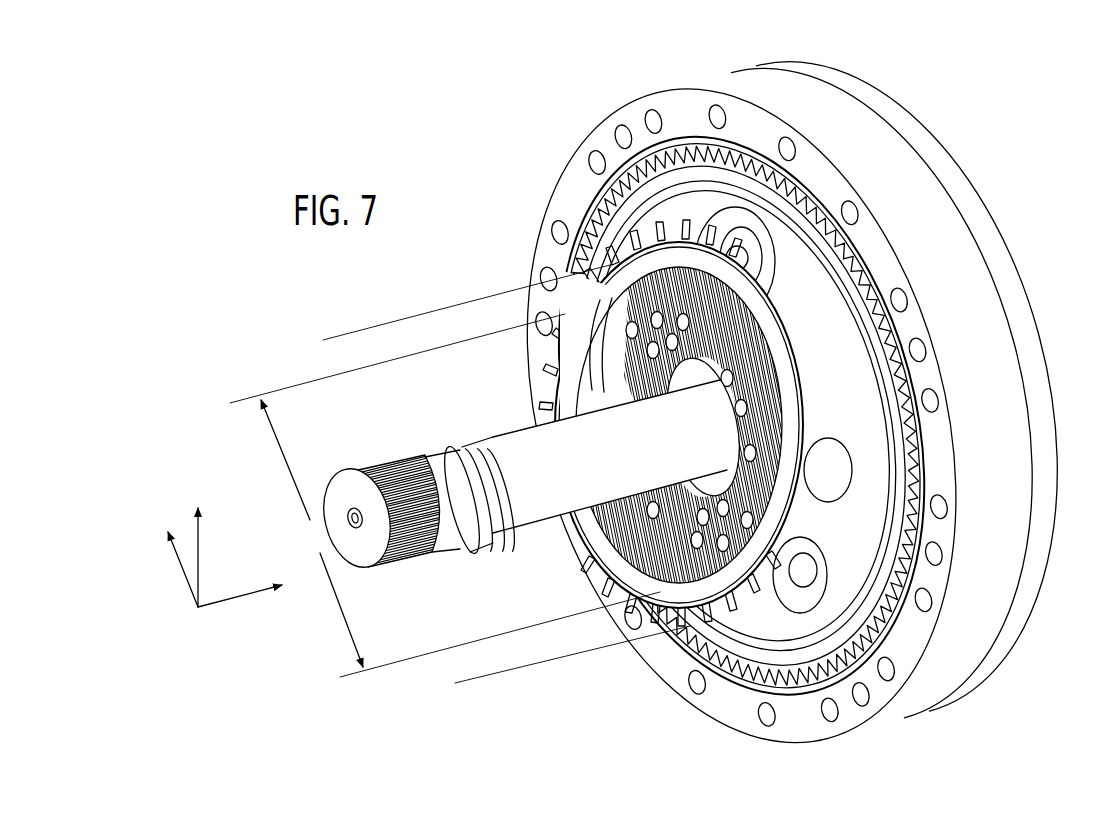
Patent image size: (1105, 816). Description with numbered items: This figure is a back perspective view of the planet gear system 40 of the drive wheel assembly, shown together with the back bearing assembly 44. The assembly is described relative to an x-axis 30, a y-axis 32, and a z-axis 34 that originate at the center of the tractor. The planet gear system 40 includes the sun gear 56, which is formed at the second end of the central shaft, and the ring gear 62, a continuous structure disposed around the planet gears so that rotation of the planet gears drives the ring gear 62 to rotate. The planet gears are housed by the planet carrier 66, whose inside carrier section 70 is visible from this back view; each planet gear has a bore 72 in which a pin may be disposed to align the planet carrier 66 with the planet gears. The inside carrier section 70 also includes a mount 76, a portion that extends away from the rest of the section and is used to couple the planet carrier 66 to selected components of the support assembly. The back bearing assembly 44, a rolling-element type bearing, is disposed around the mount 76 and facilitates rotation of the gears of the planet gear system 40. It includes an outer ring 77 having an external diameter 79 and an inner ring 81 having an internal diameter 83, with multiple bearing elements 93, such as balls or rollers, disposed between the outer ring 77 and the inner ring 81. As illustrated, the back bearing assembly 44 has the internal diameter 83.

The x-axis 30 is at (235, 598).
The y-axis 32 is at (199, 562).
The z-axis 34 is at (180, 568).
The planet gear system 40 is at (1015, 97).
The back bearing assembly 44 is at (758, 593).
The sun gear 56 is at (513, 440).
The ring gear 62 is at (928, 213).
The planet carrier 66 is at (780, 660).
The inside carrier section 70 is at (842, 567).
The bore 72 is at (735, 258).
The mount 76 is at (640, 237).
The outer ring 77 is at (598, 262).
The external diameter 79 is at (503, 727).
The inner ring 81 is at (563, 380).
The internal diameter 83 is at (445, 495).
The bearing elements 93 is at (702, 598).